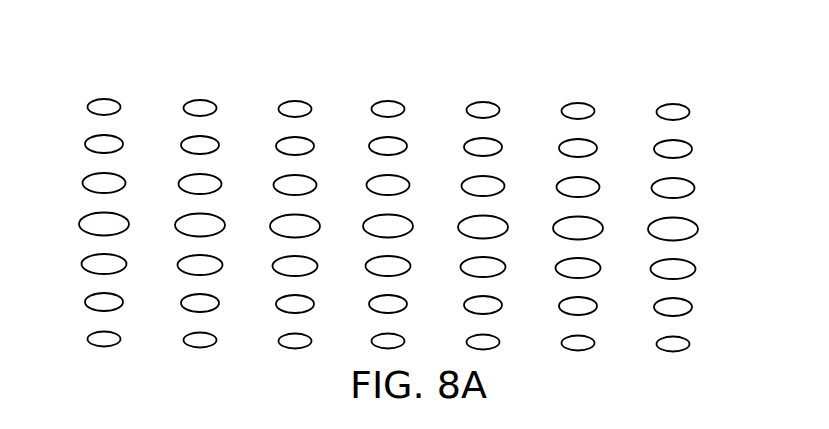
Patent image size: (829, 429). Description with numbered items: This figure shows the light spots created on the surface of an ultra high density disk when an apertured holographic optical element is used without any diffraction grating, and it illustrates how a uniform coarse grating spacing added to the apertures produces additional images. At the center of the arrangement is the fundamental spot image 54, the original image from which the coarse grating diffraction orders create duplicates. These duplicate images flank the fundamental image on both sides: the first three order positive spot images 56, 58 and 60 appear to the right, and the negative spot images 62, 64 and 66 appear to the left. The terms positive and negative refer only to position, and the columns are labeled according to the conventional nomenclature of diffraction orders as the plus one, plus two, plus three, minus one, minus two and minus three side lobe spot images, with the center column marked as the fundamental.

The negative third order side lobe spot image 66 is at (110, 50).
The negative second order side lobe spot image 64 is at (207, 50).
The negative first order side lobe spot image 62 is at (296, 50).
The fundamental spot image 54 is at (402, 57).
The positive first order side lobe spot image 56 is at (478, 57).
The positive second order side lobe spot image 58 is at (573, 57).
The positive third order side lobe spot image 60 is at (672, 57).